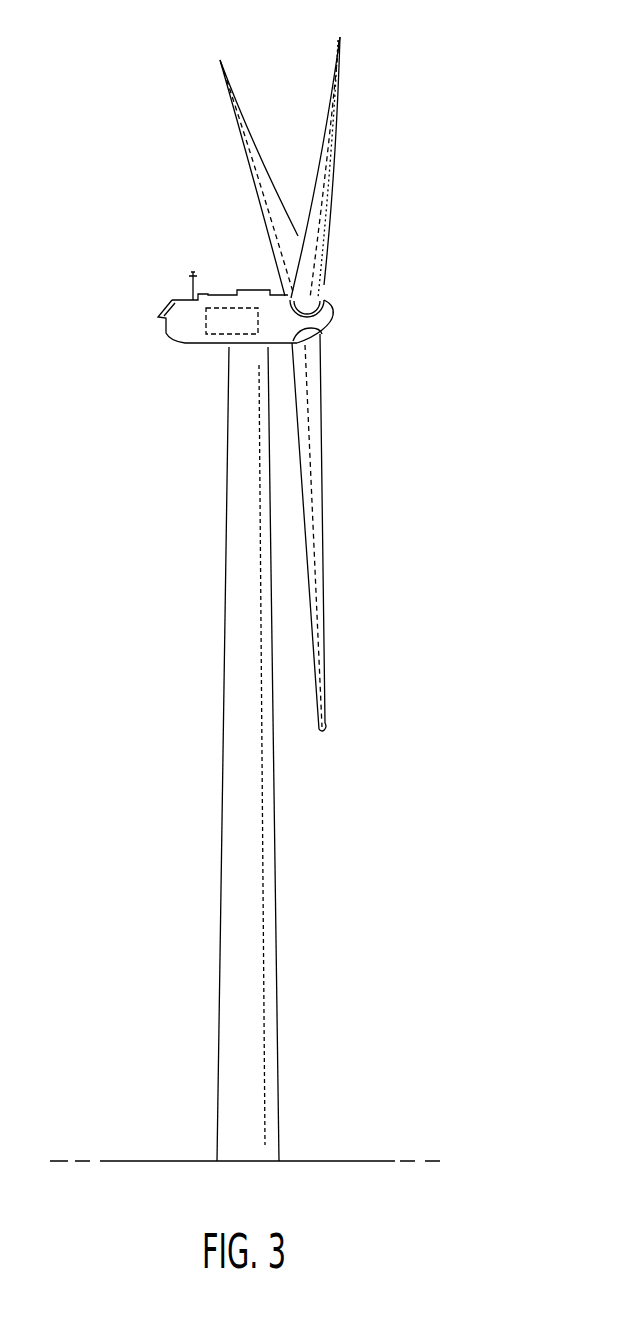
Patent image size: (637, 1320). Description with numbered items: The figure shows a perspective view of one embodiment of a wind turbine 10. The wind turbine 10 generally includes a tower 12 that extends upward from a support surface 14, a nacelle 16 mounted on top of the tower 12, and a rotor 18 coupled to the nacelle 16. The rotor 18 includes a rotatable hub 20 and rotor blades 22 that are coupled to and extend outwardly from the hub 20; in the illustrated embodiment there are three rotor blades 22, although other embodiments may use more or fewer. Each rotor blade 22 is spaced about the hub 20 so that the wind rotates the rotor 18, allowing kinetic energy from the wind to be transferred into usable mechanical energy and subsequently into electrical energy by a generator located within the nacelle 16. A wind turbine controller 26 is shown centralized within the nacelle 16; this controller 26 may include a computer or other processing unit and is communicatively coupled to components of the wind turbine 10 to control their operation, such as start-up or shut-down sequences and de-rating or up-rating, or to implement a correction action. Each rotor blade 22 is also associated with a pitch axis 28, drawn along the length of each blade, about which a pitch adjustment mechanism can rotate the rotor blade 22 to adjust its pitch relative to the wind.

The wind turbine 10 is at (455, 212).
The tower 12 is at (252, 877).
The support surface 14 is at (188, 1160).
The nacelle 16 is at (198, 337).
The rotor 18 is at (342, 296).
The rotatable hub 20 is at (332, 322).
The rotor blade 22 is at (240, 117).
The wind turbine controller 26 is at (226, 298).
The pitch axis 28 is at (262, 196).